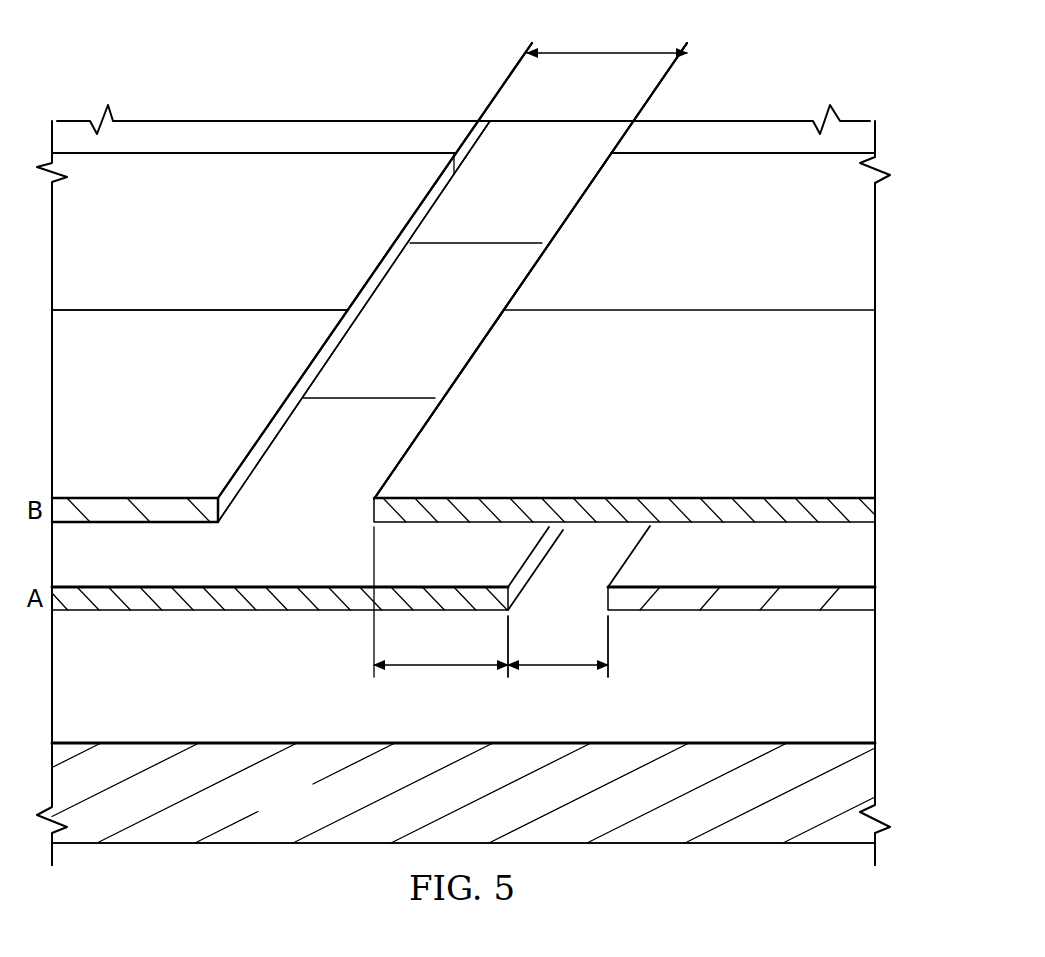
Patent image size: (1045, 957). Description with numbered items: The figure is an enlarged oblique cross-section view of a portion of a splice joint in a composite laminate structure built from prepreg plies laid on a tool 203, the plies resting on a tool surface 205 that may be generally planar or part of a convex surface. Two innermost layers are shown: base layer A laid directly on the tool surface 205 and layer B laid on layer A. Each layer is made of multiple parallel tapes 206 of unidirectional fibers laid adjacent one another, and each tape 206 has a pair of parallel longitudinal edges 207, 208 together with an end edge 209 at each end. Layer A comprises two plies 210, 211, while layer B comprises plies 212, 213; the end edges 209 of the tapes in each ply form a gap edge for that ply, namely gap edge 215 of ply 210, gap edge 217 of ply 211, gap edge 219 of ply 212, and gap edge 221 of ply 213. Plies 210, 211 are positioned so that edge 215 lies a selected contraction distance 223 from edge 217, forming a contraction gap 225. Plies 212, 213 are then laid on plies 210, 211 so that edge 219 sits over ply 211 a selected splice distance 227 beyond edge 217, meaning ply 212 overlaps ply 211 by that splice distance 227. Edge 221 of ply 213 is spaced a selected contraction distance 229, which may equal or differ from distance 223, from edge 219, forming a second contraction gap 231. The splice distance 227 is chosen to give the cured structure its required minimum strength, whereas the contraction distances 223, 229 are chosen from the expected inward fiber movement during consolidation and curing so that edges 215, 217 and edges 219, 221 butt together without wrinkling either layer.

The tool 203 is at (262, 849).
The tool surface 205 is at (282, 738).
The tape 206 is at (134, 226).
The longitudinal edge 207 is at (167, 506).
The longitudinal edge 208 is at (178, 310).
The end edge 209 is at (524, 262).
The ply 210 is at (790, 614).
The ply 211 is at (172, 613).
The ply 212 is at (733, 149).
The ply 213 is at (213, 149).
The gap edge 215 is at (606, 569).
The gap edge 217 is at (532, 573).
The gap edge 219 is at (560, 213).
The gap edge 221 is at (394, 263).
The contraction distance 223 is at (577, 677).
The contraction gap 225 is at (568, 598).
The splice distance 227 is at (442, 677).
The contraction distance 229 is at (598, 53).
The contraction gap 231 is at (555, 137).